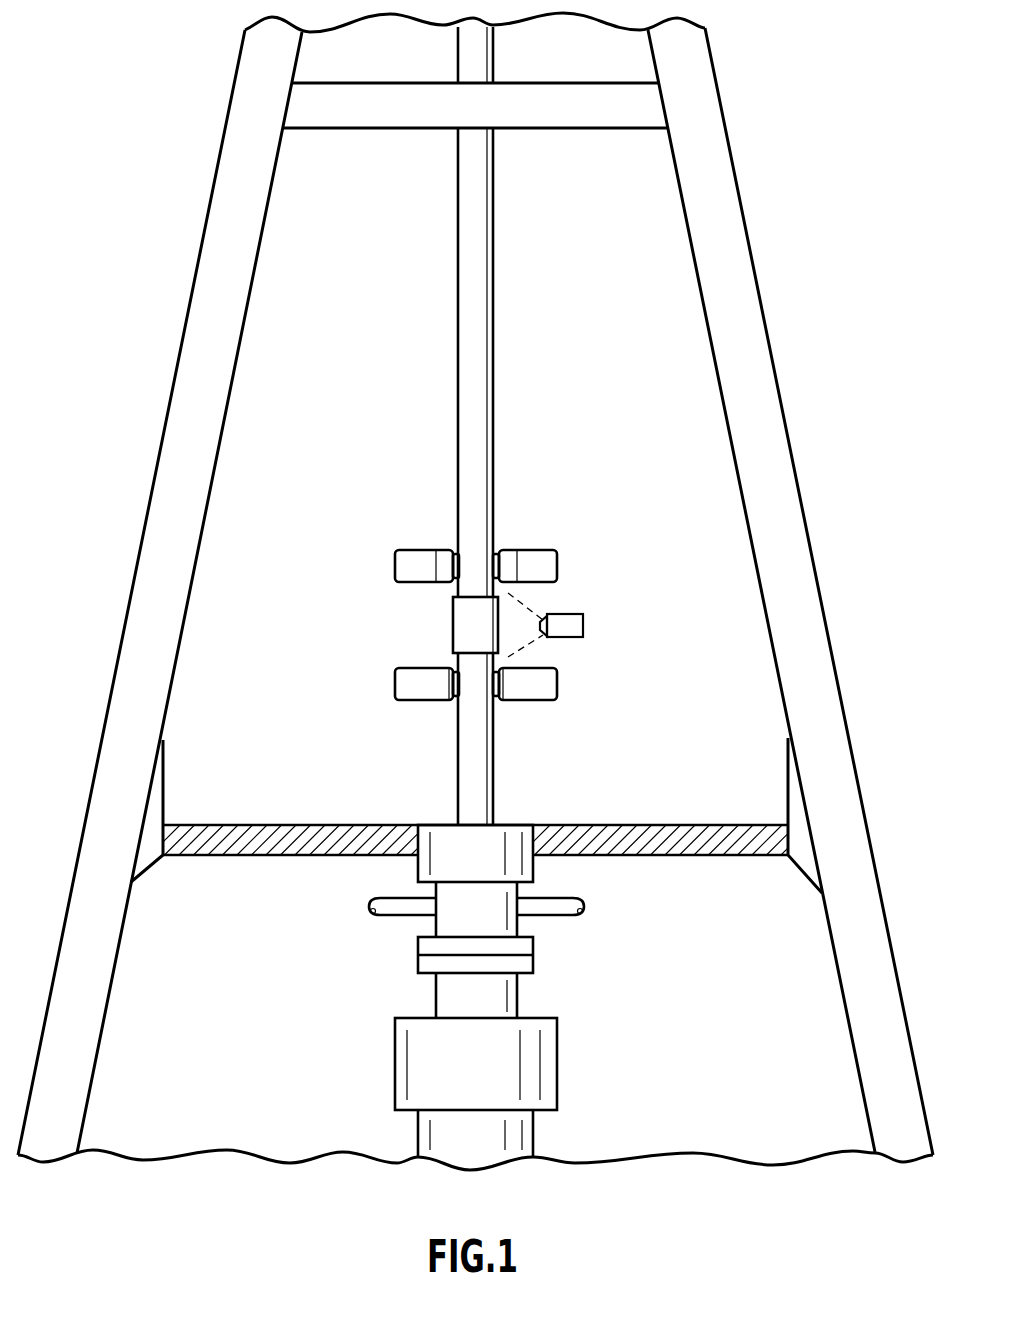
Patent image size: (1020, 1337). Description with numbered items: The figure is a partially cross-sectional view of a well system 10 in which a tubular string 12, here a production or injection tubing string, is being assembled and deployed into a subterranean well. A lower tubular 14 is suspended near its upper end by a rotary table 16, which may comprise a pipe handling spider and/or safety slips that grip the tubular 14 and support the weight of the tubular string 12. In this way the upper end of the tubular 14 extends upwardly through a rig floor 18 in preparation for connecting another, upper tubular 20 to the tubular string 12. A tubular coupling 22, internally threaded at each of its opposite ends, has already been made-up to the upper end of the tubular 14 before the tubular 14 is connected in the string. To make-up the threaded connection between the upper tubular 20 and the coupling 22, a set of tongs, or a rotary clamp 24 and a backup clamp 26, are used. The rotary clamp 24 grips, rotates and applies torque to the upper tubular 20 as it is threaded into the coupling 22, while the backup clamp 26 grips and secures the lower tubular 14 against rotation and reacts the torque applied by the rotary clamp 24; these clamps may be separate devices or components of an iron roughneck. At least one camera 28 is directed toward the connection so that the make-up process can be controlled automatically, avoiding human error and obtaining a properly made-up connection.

The system 10 is at (627, 566).
The tubular string 12 is at (456, 741).
The tubular 14 is at (494, 725).
The rotary table 16 is at (520, 825).
The rig floor 18 is at (255, 825).
The tubular 20 is at (493, 375).
The tubular coupling 22 is at (453, 613).
The rotary clamp 24 is at (543, 550).
The backup clamp 26 is at (395, 678).
The camera 28 is at (583, 637).